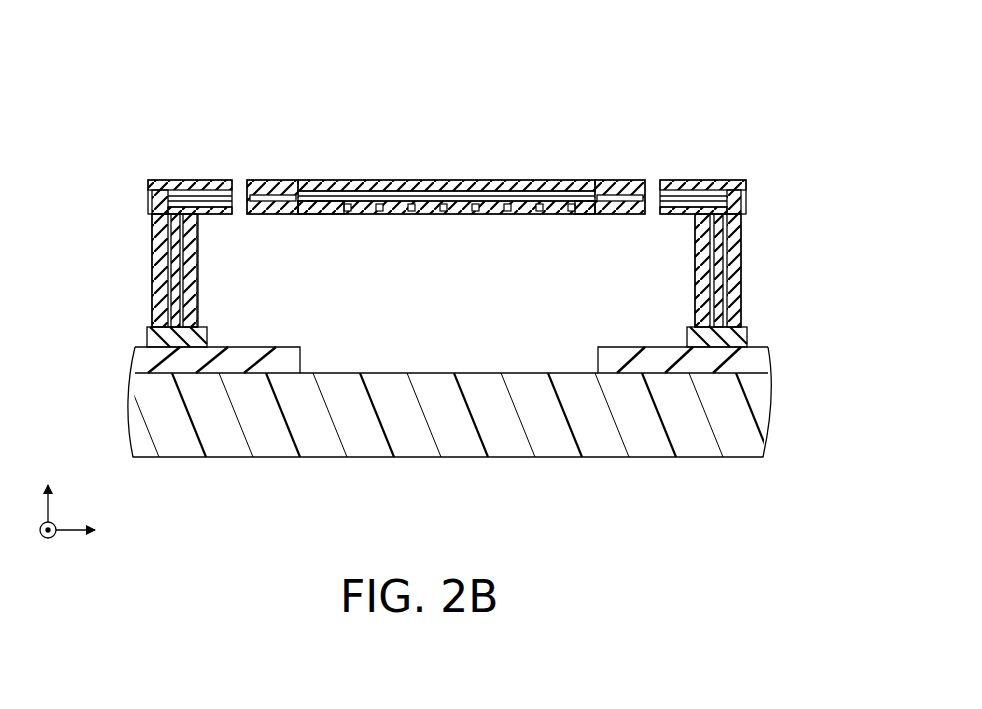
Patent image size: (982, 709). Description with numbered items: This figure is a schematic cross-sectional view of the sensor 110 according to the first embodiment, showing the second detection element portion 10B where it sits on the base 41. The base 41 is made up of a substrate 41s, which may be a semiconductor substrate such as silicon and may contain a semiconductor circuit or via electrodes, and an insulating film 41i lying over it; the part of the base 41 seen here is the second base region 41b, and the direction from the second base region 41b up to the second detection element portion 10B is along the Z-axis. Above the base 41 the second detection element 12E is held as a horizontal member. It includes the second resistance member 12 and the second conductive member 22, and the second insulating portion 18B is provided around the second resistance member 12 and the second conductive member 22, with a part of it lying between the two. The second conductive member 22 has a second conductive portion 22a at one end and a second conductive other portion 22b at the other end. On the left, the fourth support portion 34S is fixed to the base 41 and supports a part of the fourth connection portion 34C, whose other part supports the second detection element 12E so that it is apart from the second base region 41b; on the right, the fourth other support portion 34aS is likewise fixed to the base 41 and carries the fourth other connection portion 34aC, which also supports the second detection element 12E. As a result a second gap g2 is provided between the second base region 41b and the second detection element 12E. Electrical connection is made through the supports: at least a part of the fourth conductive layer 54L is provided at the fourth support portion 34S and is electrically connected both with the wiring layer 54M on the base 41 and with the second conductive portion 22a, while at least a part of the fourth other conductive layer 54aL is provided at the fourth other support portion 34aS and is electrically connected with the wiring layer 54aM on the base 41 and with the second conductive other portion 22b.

The sensor 110 is at (836, 140).
The second detection element portion 10B is at (766, 165).
The second resistance member 12 is at (445, 186).
The second detection element 12E is at (549, 172).
The second insulating portion 18B is at (370, 186).
The second conductive member 22 is at (444, 208).
The second conductive portion 22a is at (305, 208).
The second conductive other portion 22b is at (594, 208).
The fourth support portion 34S is at (190, 180).
The fourth connection portion 34C is at (265, 186).
The fourth other support portion 34aS is at (689, 186).
The fourth other connection portion 34aC is at (615, 186).
The fourth conductive layer 54L is at (192, 296).
The wiring layer 54M is at (158, 337).
The fourth other conductive layer 54aL is at (703, 297).
The wiring layer 54aM is at (736, 337).
The base 41 is at (270, 503).
The substrate 41s is at (183, 406).
The insulating film 41i is at (266, 366).
The second base region 41b is at (453, 430).
The second gap g2 is at (386, 342).